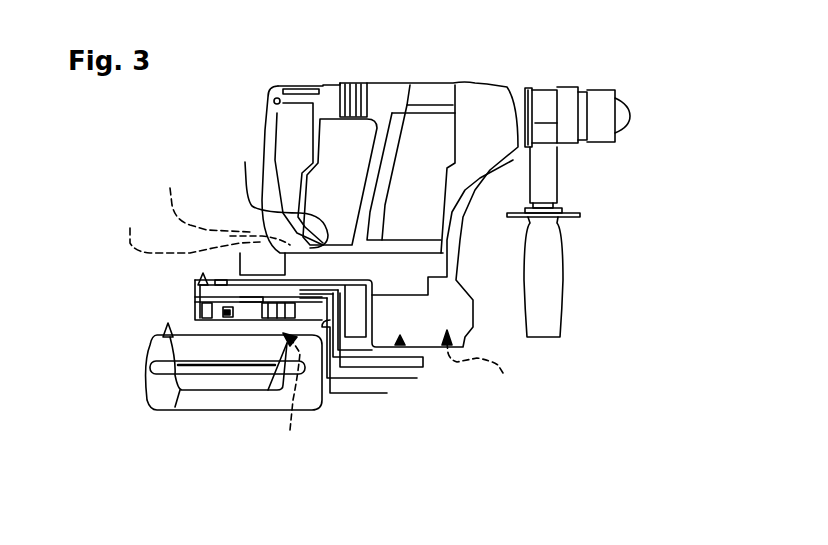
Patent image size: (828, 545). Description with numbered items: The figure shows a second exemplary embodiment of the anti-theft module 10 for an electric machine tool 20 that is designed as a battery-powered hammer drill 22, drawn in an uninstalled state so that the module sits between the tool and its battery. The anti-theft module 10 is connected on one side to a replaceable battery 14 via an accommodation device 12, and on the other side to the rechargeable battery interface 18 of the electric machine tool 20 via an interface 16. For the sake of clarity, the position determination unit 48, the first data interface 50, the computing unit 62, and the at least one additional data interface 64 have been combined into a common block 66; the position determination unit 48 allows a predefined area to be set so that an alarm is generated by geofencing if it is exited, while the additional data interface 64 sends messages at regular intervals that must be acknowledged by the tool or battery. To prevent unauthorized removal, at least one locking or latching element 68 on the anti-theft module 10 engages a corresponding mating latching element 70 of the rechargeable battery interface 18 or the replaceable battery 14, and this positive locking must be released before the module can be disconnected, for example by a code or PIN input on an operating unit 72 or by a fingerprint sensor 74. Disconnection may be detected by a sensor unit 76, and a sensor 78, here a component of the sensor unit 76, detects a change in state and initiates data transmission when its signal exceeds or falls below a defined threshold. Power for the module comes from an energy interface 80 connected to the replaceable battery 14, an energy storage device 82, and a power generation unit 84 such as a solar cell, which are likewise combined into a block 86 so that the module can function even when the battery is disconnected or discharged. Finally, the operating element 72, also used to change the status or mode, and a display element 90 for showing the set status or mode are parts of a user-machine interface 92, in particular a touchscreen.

The anti-theft module 10 is at (160, 287).
The accommodation device 12 is at (207, 333).
The replaceable battery 14 is at (150, 387).
The interface 16 is at (280, 195).
The rechargeable battery interface 18 is at (223, 282).
The electric machine tool 20 is at (600, 212).
The hammer drill 22 is at (588, 164).
The position determination unit 48 is at (419, 394).
The first data interface 50 is at (419, 394).
The computing unit 62 is at (419, 394).
The additional data interface 64 is at (538, 452).
The common block 66 is at (419, 394).
The latching element 68 is at (333, 330).
The mating latching element 70 is at (406, 390).
The operating element 72 is at (258, 318).
The fingerprint sensor 74 is at (208, 305).
The sensor unit 76 is at (179, 229).
The sensor 78 is at (179, 229).
The energy interface 80 is at (210, 181).
The energy storage device 82 is at (210, 181).
The power generation unit 84 is at (216, 160).
The block 86 is at (210, 181).
The display element 90 is at (228, 318).
The user-machine interface 92 is at (239, 398).